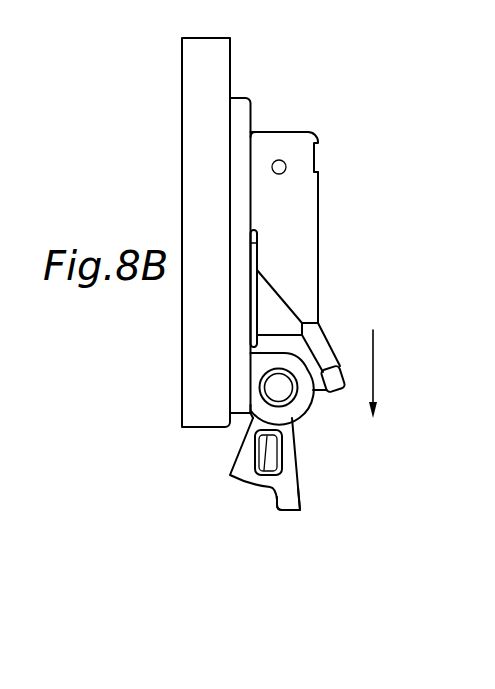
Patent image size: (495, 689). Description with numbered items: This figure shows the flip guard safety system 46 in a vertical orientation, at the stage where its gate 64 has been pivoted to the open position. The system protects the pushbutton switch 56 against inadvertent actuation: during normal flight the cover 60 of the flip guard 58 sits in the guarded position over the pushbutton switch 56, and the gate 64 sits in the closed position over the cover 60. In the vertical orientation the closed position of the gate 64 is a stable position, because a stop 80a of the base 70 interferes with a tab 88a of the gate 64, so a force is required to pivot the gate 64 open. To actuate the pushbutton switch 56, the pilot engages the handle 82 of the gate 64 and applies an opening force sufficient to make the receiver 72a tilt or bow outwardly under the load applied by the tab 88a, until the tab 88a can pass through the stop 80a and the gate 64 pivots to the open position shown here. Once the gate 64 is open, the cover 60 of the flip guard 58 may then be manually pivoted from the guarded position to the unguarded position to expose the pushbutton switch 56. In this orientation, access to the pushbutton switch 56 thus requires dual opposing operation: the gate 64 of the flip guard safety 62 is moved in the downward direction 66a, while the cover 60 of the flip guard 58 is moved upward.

The flip guard safety system 46 is at (322, 199).
The flip guard 58 is at (310, 269).
The cover 60 is at (310, 233).
The pushbutton switch 56 is at (270, 314).
The base 70 is at (237, 360).
The flip guard safety 62 is at (296, 417).
The stop 80a is at (336, 392).
The downward direction 66a is at (373, 367).
The gate 64 is at (252, 480).
The handle 82 is at (293, 511).
The receiver 72a is at (250, 415).
The tab 88a is at (255, 455).